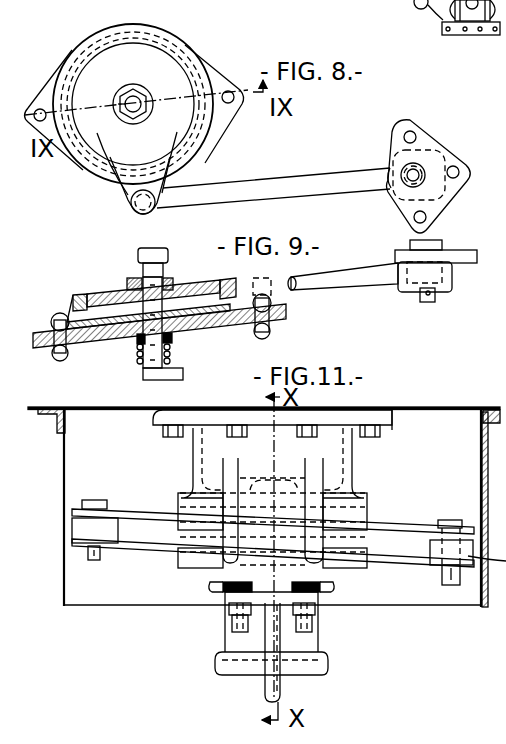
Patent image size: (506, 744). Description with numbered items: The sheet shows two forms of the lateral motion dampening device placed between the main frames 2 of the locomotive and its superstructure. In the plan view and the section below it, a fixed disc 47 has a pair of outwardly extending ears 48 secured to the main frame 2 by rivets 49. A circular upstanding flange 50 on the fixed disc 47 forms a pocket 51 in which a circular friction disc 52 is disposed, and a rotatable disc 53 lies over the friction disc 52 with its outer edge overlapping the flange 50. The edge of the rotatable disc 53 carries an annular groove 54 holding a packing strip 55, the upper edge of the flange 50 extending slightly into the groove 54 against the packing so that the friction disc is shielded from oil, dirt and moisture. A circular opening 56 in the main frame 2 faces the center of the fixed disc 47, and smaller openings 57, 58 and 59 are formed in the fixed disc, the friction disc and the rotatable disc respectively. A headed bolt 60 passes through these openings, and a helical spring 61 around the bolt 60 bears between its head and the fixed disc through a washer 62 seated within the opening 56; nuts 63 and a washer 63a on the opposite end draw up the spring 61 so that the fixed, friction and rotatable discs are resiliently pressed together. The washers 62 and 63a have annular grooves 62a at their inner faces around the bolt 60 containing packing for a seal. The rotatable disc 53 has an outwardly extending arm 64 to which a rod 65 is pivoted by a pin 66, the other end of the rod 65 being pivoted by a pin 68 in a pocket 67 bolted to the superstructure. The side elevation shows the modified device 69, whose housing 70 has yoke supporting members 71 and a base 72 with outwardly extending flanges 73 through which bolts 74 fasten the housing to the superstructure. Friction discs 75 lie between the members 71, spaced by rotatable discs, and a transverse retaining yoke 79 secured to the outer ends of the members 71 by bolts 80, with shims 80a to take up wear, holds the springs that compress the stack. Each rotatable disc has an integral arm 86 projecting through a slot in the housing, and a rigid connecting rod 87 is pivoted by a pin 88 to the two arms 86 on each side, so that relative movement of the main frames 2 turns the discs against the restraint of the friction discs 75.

In FIG. 9, the main frame 2 is at (288, 320).
In FIG. 9, the fixed disc 47 is at (270, 310).
In FIG. 8, the ears 48 is at (232, 110).
In FIG. 9, the rivets 49 is at (62, 360).
In FIG. 9, the circular upstanding flange 50 is at (80, 314).
In FIG. 9, the pocket 51 is at (98, 295).
In FIG. 9, the friction disc 52 is at (112, 294).
In FIG. 8, the rotatable disc 53 is at (184, 48).
In FIG. 9, the rotatable disc 53 is at (138, 287).
In FIG. 9, the annular groove 54 is at (92, 300).
In FIG. 9, the packing strip 55 is at (212, 285).
In FIG. 9, the circular opening 56 is at (176, 325).
In FIG. 9, the opening 57 is at (172, 338).
In FIG. 9, the opening 58 is at (178, 290).
In FIG. 9, the opening 59 is at (163, 270).
In FIG. 9, the headed bolt 60 is at (180, 376).
In FIG. 9, the helical spring 61 is at (146, 364).
In FIG. 9, the washer 62 is at (137, 353).
In FIG. 9, the annular grooves 62a is at (150, 258).
In FIG. 8, the nuts 63 is at (134, 88).
In FIG. 9, the nuts 63 is at (141, 272).
In FIG. 8, the washer 63a is at (118, 101).
In FIG. 8, the arm 64 is at (118, 186).
In FIG. 8, the rod 65 is at (375, 190).
In FIG. 9, the rod 65 is at (343, 276).
In FIG. 8, the pin 66 is at (156, 197).
In FIG. 8, the pocket 67 is at (446, 156).
In FIG. 9, the pin 68 is at (430, 300).
In FIG. 8, the lateral motion dampening device 69 is at (473, 33).
In FIG. 11, the lateral motion dampening device 69 is at (273, 501).
In FIG. 11, the housing 70 is at (343, 481).
In FIG. 11, the yoke supporting members 71 is at (225, 578).
In FIG. 11, the base 72 is at (350, 411).
In FIG. 11, the flanges 73 is at (385, 420).
In FIG. 9, the bolts 74 is at (499, 250).
In FIG. 11, the bolts 74 is at (170, 440).
In FIG. 11, the friction discs 75 is at (267, 472).
In FIG. 11, the retaining yoke 79 is at (235, 640).
In FIG. 11, the bolts 80 is at (312, 636).
In FIG. 11, the shims 80a is at (235, 590).
In FIG. 8, the arm 86 is at (437, 10).
In FIG. 11, the arm 86 is at (160, 516).
In FIG. 11, the connecting rod 87 is at (72, 531).
In FIG. 11, the pin 88 is at (88, 560).